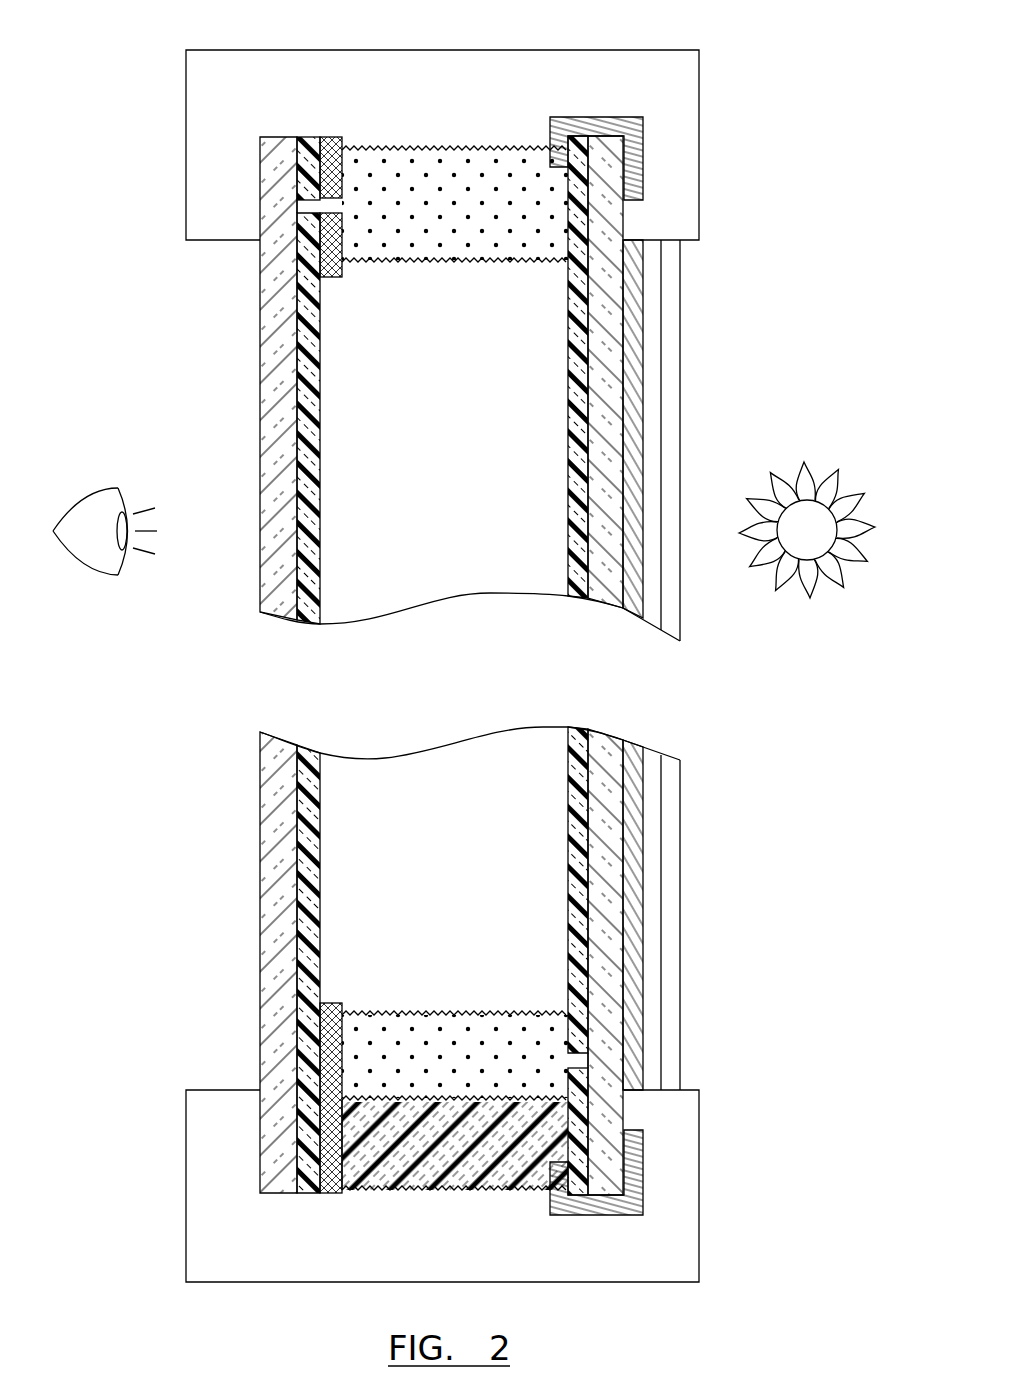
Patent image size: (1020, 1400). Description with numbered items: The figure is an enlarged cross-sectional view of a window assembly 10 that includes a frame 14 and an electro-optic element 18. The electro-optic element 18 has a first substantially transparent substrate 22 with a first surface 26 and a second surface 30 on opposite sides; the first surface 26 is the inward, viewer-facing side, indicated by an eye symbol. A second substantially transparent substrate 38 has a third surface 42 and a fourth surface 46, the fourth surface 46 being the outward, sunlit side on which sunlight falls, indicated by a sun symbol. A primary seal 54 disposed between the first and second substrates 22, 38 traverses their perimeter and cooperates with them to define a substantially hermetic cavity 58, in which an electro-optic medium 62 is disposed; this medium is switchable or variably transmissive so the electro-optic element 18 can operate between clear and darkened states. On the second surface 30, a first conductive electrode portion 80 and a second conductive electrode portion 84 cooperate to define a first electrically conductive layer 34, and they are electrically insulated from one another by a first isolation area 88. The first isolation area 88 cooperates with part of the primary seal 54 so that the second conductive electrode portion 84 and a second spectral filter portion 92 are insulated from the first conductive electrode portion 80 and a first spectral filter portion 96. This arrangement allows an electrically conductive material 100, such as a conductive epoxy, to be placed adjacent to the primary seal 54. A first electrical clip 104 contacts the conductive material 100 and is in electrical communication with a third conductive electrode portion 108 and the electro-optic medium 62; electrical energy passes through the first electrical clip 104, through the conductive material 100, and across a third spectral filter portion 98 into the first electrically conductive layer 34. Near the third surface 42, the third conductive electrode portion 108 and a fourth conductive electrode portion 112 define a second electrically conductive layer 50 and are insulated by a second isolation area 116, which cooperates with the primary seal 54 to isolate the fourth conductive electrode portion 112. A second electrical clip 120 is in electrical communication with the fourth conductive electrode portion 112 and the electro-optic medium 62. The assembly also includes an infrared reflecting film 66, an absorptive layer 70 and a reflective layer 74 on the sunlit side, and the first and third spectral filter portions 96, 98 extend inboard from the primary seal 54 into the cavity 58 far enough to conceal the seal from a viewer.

The window assembly 10 is at (790, 39).
The frame 14 is at (225, 100).
The electro-optic element 18 is at (746, 248).
The first substantially transparent substrate 22 is at (277, 395).
The first surface 26 is at (262, 763).
The second surface 30 is at (298, 802).
The first electrically conductive layer 34 is at (288, 930).
The second substantially transparent substrate 38 is at (608, 800).
The third surface 42 is at (590, 320).
The fourth surface 46 is at (625, 840).
The second electrically conductive layer 50 is at (597, 420).
The primary seal 54 is at (503, 170).
The cavity 58 is at (352, 357).
The electro-optic medium 62 is at (452, 450).
The infrared reflecting film 66 is at (673, 600).
The absorptive layer 70 is at (633, 927).
The reflective layer 74 is at (650, 462).
The first conductive electrode portion 80 is at (303, 240).
The second conductive electrode portion 84 is at (305, 163).
The first isolation area 88 is at (288, 205).
The second spectral filter portion 92 is at (332, 160).
The first spectral filter portion 96 is at (320, 258).
The third spectral filter portion 98 is at (320, 1035).
The electrically conductive material 100 is at (380, 1135).
The first electrical clip 104 is at (633, 1160).
The third conductive electrode portion 108 is at (580, 1117).
The fourth conductive electrode portion 112 is at (588, 345).
The second isolation area 116 is at (597, 1058).
The second electrical clip 120 is at (598, 137).